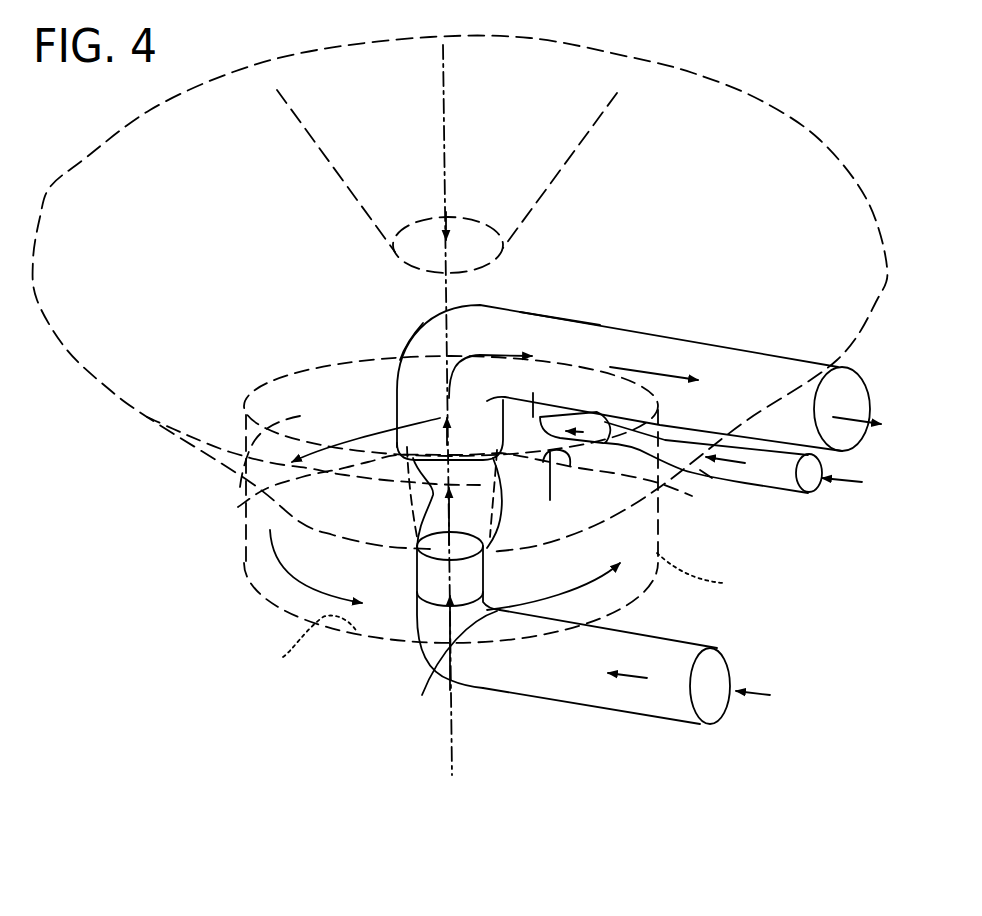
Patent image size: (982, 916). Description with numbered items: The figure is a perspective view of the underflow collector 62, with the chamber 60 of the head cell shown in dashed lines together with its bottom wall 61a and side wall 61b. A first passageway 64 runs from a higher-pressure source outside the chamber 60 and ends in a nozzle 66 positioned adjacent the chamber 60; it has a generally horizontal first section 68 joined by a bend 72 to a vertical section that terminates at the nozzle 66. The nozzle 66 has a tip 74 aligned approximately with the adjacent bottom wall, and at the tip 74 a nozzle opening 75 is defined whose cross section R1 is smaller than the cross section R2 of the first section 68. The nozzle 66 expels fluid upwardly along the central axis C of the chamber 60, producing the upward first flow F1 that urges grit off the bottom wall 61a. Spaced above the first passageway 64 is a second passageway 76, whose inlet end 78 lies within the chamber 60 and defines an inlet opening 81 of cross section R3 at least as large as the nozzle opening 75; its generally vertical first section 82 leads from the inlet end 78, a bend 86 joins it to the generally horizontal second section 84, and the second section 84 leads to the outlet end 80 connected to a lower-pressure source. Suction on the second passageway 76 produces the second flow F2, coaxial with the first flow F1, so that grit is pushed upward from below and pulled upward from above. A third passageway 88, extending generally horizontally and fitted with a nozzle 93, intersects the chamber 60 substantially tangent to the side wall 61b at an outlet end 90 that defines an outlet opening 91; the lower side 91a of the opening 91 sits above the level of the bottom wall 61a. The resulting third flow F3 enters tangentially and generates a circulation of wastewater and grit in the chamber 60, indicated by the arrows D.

The chamber 60 is at (243, 498).
The bottom wall 61a is at (291, 646).
The side wall 61b is at (718, 575).
The underflow collector 62 is at (233, 412).
The first passageway 64 is at (587, 708).
The nozzle 66 is at (417, 560).
The first section 68 is at (648, 633).
The bend 72 is at (423, 657).
The tip 74 is at (497, 532).
The nozzle opening 75 is at (383, 548).
The second passageway 76 is at (540, 315).
The inlet end 78 is at (465, 486).
The outlet end 80 is at (856, 444).
The inlet opening 81 is at (423, 505).
The first section 82 is at (396, 390).
The second section 84 is at (652, 328).
The bend 86 is at (423, 323).
The third passageway 88 is at (757, 483).
The outlet end 90 is at (538, 390).
The outlet opening 91 is at (590, 363).
The lower side 91a is at (556, 492).
The nozzle 93 is at (704, 478).
The central axis C is at (455, 712).
The circulation arrows D is at (333, 447).
The first flow F1 is at (425, 665).
The second flow F2 is at (440, 433).
The third flow F3 is at (587, 353).
The cross section of nozzle opening R1 is at (483, 550).
The cross section of first section R2 is at (712, 712).
The cross section of inlet opening R3 is at (417, 480).